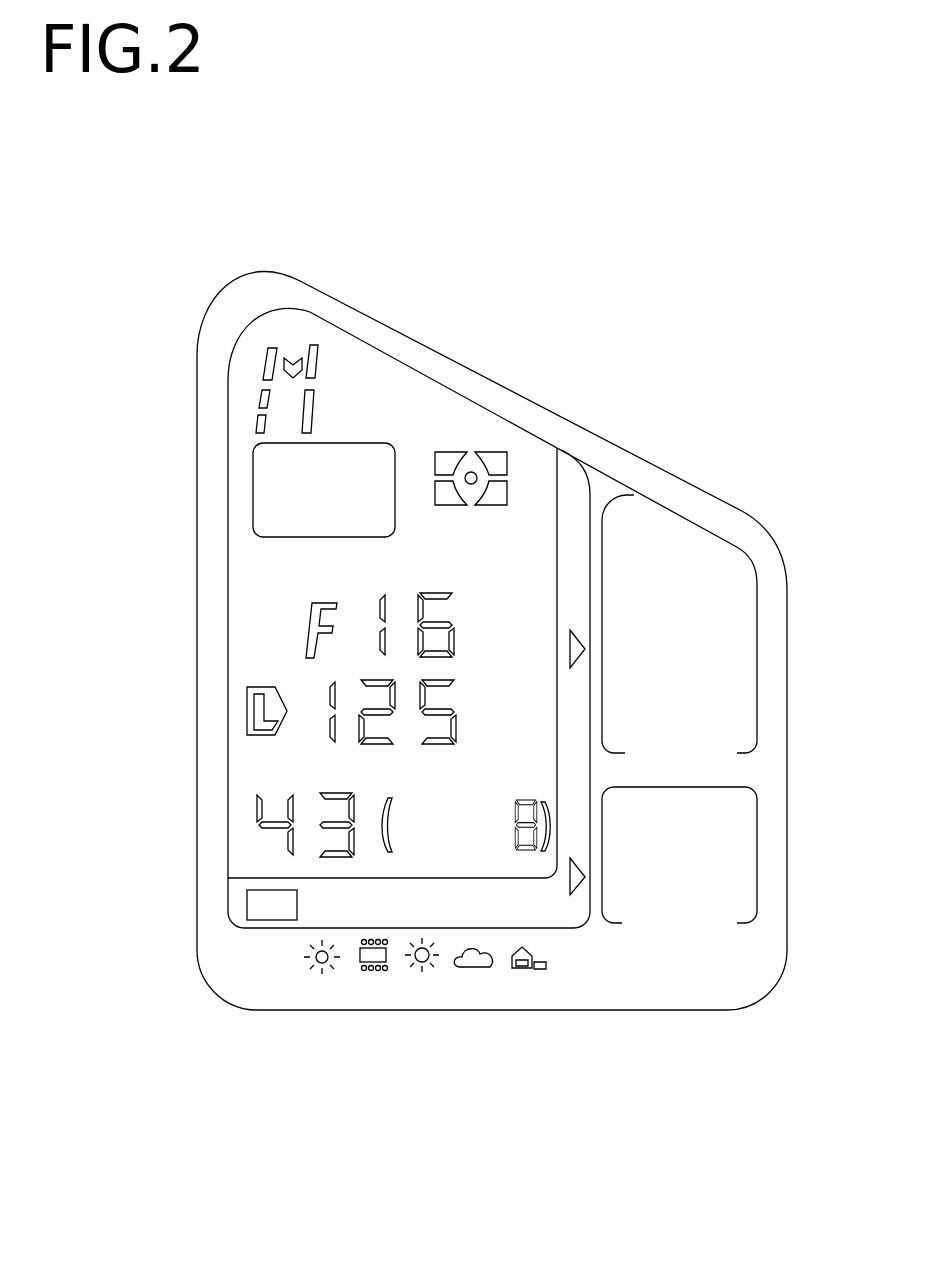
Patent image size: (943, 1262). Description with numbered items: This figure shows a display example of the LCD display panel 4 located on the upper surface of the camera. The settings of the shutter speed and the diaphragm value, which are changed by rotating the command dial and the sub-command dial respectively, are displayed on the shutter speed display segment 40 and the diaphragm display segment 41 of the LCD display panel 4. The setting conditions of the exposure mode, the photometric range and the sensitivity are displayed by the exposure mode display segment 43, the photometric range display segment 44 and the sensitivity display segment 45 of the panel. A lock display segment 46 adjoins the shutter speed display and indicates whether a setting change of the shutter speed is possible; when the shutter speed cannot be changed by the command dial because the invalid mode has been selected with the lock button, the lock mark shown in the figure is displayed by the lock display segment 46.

The LCD display panel 4 is at (635, 427).
The exposure mode display segment 43 is at (291, 348).
The photometric range display segment 44 is at (457, 437).
The diaphragm display segment 41 is at (296, 633).
The lock display segment 46 is at (240, 712).
The shutter speed display segment 40 is at (308, 730).
The sensitivity display segment 45 is at (562, 878).